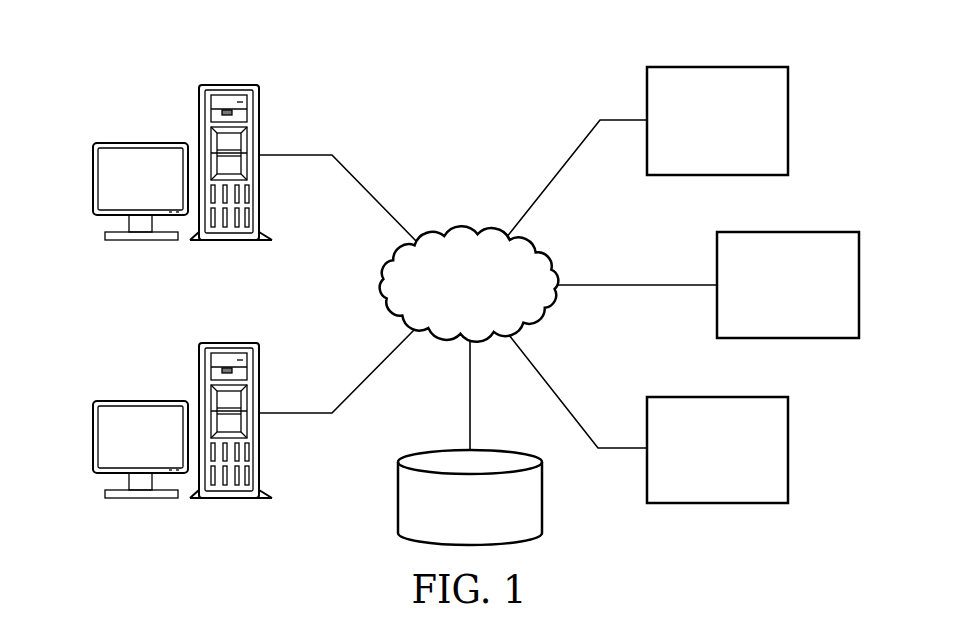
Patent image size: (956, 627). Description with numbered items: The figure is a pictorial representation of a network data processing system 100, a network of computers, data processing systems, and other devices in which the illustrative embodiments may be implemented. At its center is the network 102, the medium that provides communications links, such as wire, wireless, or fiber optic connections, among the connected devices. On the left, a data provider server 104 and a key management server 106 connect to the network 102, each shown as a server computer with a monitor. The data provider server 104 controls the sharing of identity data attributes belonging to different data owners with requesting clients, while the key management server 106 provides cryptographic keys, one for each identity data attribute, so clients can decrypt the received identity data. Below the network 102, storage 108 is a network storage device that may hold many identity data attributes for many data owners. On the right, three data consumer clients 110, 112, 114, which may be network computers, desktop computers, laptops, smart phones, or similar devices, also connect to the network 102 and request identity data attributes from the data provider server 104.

The network data processing system 100 is at (334, 64).
The network 102 is at (447, 230).
The data provider server 104 is at (93, 180).
The key management server 106 is at (93, 437).
The storage 108 is at (398, 497).
The data consumer client 110 is at (789, 109).
The data consumer client 112 is at (860, 298).
The data consumer client 114 is at (789, 462).